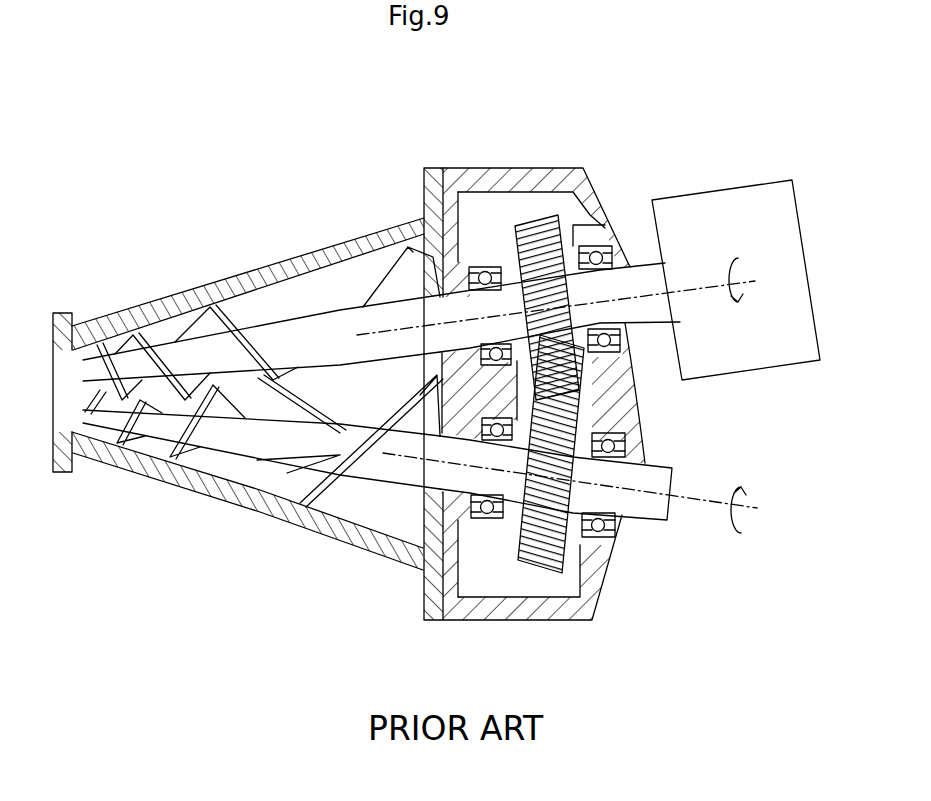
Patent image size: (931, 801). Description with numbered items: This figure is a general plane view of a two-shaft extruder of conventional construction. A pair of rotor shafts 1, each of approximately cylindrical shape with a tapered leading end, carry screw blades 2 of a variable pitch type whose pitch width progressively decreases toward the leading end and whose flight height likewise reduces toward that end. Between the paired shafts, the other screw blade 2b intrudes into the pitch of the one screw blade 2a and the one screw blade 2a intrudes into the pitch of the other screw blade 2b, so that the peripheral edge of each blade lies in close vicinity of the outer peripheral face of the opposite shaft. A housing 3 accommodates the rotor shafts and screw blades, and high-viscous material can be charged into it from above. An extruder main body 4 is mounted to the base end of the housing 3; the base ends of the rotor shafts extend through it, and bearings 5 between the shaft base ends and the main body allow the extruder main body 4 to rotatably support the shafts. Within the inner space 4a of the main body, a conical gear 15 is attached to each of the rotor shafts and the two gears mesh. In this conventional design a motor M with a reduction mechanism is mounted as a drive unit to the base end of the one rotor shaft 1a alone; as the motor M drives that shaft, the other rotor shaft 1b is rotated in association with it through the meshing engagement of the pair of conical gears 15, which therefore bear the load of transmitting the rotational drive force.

The rotor shaft 1 is at (557, 389).
The one rotor shaft 1a is at (638, 267).
The other rotor shaft 1b is at (644, 513).
The screw blade 2 is at (263, 393).
The one screw blade 2a is at (221, 310).
The other screw blade 2b is at (282, 473).
The housing 3 is at (322, 258).
The extruder main body 4 is at (583, 168).
The inner space 4a is at (500, 224).
The bearing 5 is at (472, 268).
The conical gear 15 is at (533, 225).
The motor M is at (735, 198).